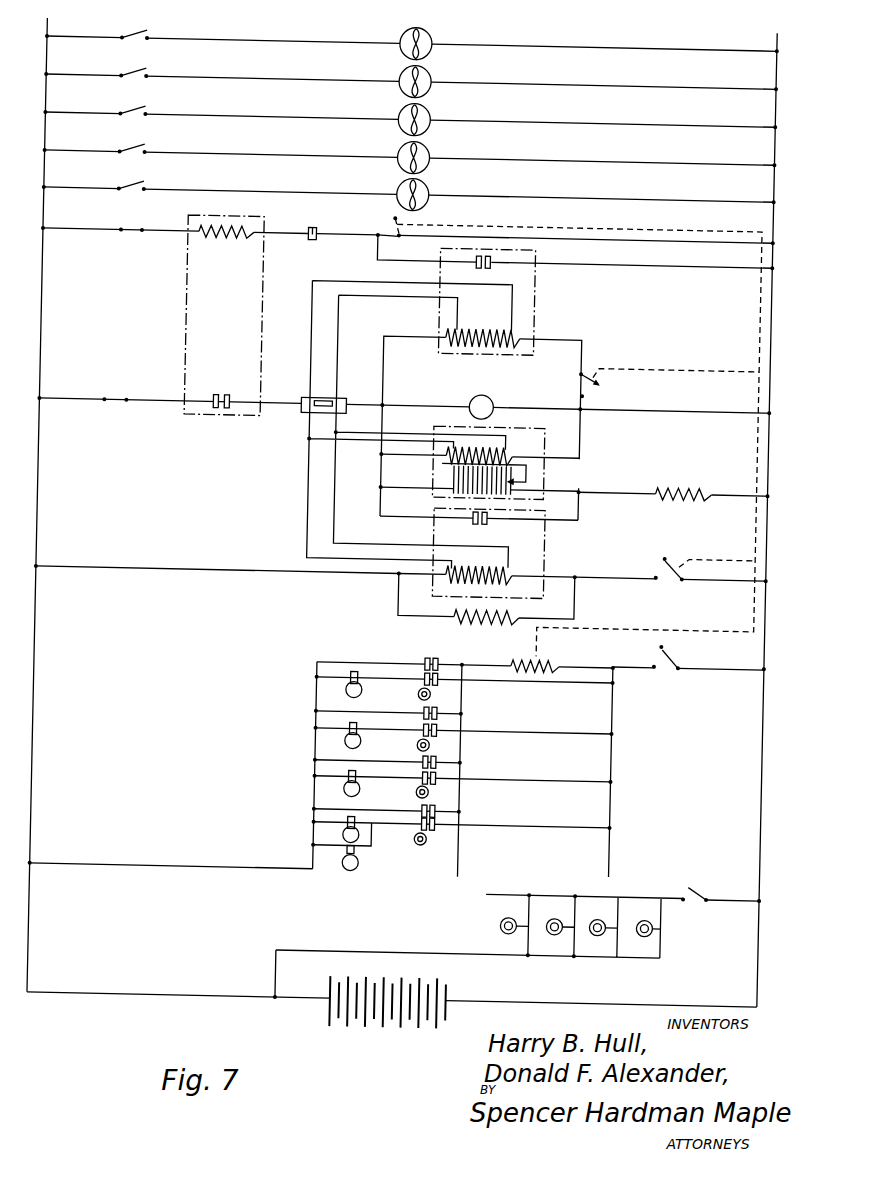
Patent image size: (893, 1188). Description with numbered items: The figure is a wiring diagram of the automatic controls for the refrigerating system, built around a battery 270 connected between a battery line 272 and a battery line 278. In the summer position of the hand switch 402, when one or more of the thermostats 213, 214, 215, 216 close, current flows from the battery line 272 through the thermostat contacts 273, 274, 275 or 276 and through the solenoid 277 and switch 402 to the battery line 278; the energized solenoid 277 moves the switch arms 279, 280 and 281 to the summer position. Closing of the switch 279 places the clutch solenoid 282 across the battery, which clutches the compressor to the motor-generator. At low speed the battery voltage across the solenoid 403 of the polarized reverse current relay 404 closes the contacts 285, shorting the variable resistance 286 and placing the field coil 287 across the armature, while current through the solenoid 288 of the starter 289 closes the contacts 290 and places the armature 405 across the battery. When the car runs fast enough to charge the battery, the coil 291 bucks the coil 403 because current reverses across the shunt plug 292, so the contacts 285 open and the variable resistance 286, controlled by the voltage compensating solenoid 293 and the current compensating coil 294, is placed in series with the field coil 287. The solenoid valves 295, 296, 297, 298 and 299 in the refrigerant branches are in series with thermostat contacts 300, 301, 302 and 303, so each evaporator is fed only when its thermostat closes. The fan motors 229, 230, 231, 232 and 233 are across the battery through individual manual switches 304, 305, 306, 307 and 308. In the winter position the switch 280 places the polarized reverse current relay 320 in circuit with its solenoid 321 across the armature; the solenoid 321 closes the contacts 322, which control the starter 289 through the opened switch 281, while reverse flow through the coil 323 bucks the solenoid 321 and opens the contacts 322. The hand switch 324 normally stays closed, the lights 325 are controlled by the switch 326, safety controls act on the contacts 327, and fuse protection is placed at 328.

The thermostat 213 is at (431, 687).
The thermostat 214 is at (431, 737).
The thermostat 215 is at (431, 784).
The thermostat 216 is at (430, 831).
The fan motor 229 is at (428, 28).
The fan motor 230 is at (428, 66).
The fan motor 231 is at (428, 104).
The fan motor 232 is at (428, 142).
The fan motor 233 is at (428, 179).
The battery 270 is at (406, 1021).
The battery line 272 is at (48, 786).
The thermostat contacts 273 is at (446, 650).
The thermostat contacts 274 is at (447, 699).
The thermostat contacts 275 is at (449, 749).
The thermostat contacts 276 is at (449, 799).
The solenoid 277 is at (572, 655).
The battery line 278 is at (776, 760).
The switch arm 279 is at (692, 572).
The switch arm 280 is at (592, 362).
The switch arm 281 is at (390, 229).
The clutch solenoid 282 is at (502, 615).
The contacts 285 is at (494, 516).
The variable resistance 286 is at (463, 482).
The field coil 287 is at (690, 476).
The solenoid 288 is at (240, 224).
The starter 289 is at (268, 320).
The contacts 290 is at (233, 390).
The coil 291 is at (458, 570).
The shunt plug 292 is at (322, 392).
The voltage compensating solenoid 293 is at (532, 452).
The current compensating coil 294 is at (512, 438).
The solenoid valve 295 is at (361, 686).
The solenoid valve 296 is at (361, 737).
The solenoid valve 297 is at (361, 785).
The solenoid valve 298 is at (359, 831).
The solenoid valve 299 is at (375, 859).
The thermostat contacts 300 is at (453, 822).
The thermostat contacts 301 is at (452, 772).
The thermostat contacts 302 is at (452, 719).
The thermostat contacts 303 is at (452, 669).
The manual switch 304 is at (135, 31).
The manual switch 305 is at (135, 69).
The manual switch 306 is at (135, 107).
The manual switch 307 is at (135, 145).
The manual switch 308 is at (135, 182).
The polarized reverse current relay 320 is at (541, 277).
The solenoid 321 is at (526, 330).
The contacts 322 is at (492, 258).
The coil 323 is at (490, 322).
The hand switch 324 is at (132, 233).
The lights 325 is at (570, 912).
The switch 326 is at (714, 882).
The contacts 327 is at (317, 235).
The fuse protection 328 is at (122, 396).
The switch 402 is at (690, 663).
The solenoid 403 is at (524, 568).
The polarized reverse current relay 404 is at (556, 539).
The armature 405 is at (493, 388).